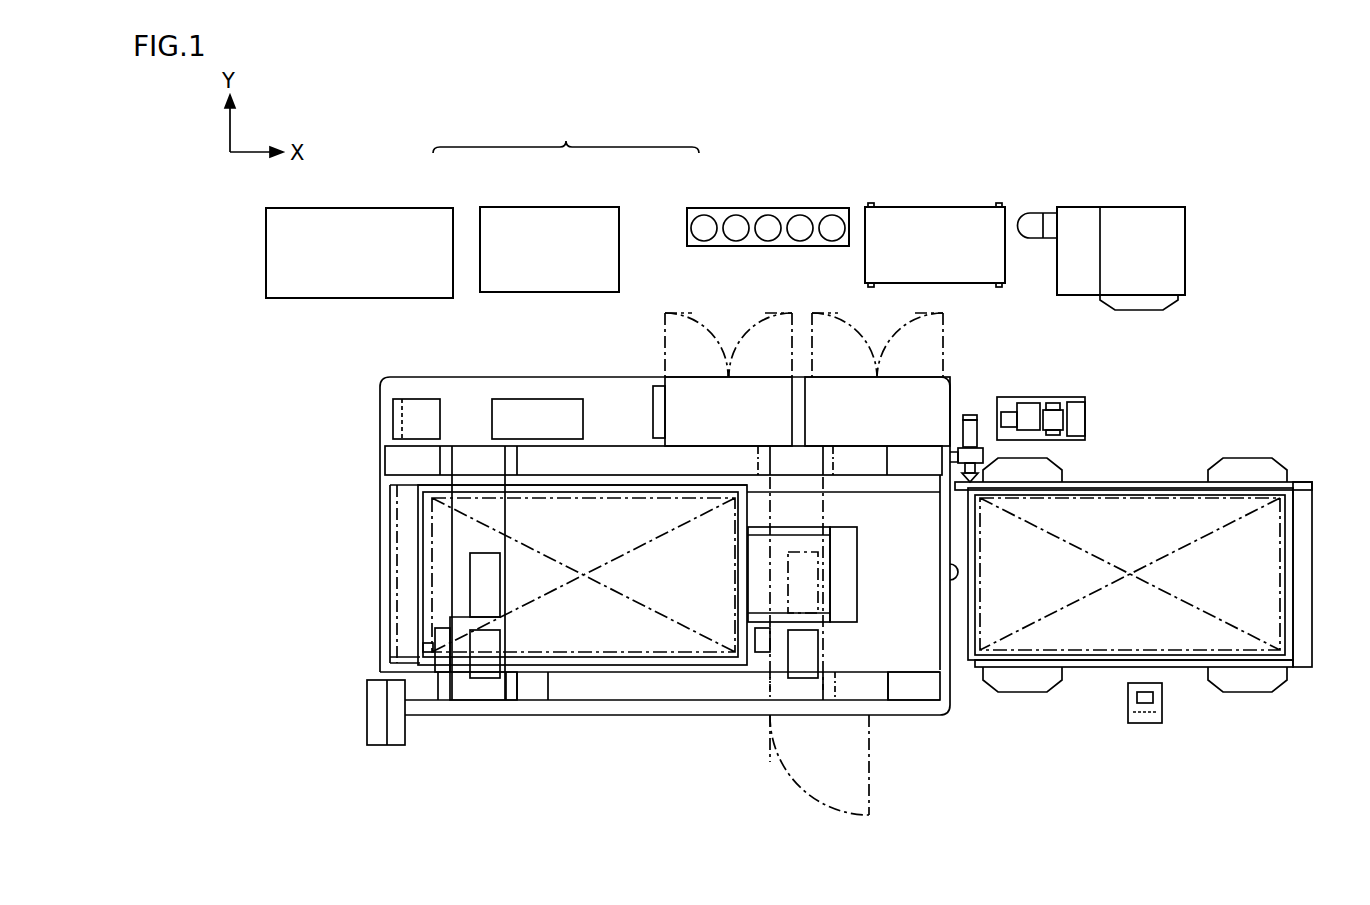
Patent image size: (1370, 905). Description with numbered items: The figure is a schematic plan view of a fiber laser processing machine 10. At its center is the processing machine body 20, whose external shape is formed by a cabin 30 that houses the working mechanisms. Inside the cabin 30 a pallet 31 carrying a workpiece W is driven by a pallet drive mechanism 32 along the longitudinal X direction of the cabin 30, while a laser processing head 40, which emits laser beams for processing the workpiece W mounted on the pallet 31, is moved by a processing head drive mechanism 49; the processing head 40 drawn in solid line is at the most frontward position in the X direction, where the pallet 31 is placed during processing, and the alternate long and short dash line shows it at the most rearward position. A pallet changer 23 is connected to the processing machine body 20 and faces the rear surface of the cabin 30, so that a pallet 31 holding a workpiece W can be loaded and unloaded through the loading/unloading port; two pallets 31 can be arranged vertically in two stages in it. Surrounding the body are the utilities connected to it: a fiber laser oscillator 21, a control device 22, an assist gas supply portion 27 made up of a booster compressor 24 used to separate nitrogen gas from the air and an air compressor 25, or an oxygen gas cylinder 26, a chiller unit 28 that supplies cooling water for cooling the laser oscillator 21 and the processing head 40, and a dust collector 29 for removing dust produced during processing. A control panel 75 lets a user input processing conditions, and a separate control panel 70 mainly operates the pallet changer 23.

The fiber laser processing machine 10 is at (1227, 176).
The processing machine body 20 is at (622, 730).
The fiber laser oscillator 21 is at (705, 390).
The control device 22 is at (853, 390).
The pallet changer 23 is at (1188, 481).
The booster compressor 24 is at (410, 218).
The air compressor 25 is at (568, 218).
The oxygen gas cylinder 26 is at (722, 218).
The assist gas supply portion 27 is at (566, 136).
The chiller unit 28 is at (914, 218).
The dust collector 29 is at (1142, 218).
The cabin 30 is at (437, 377).
The pallet 31 is at (703, 663).
The pallet drive mechanism 32 is at (920, 658).
The laser processing head 40 is at (430, 645).
The processing head drive mechanism 49 is at (478, 692).
The control panel 70 is at (903, 707).
The control panel 75 is at (376, 738).
The workpiece W is at (558, 632).